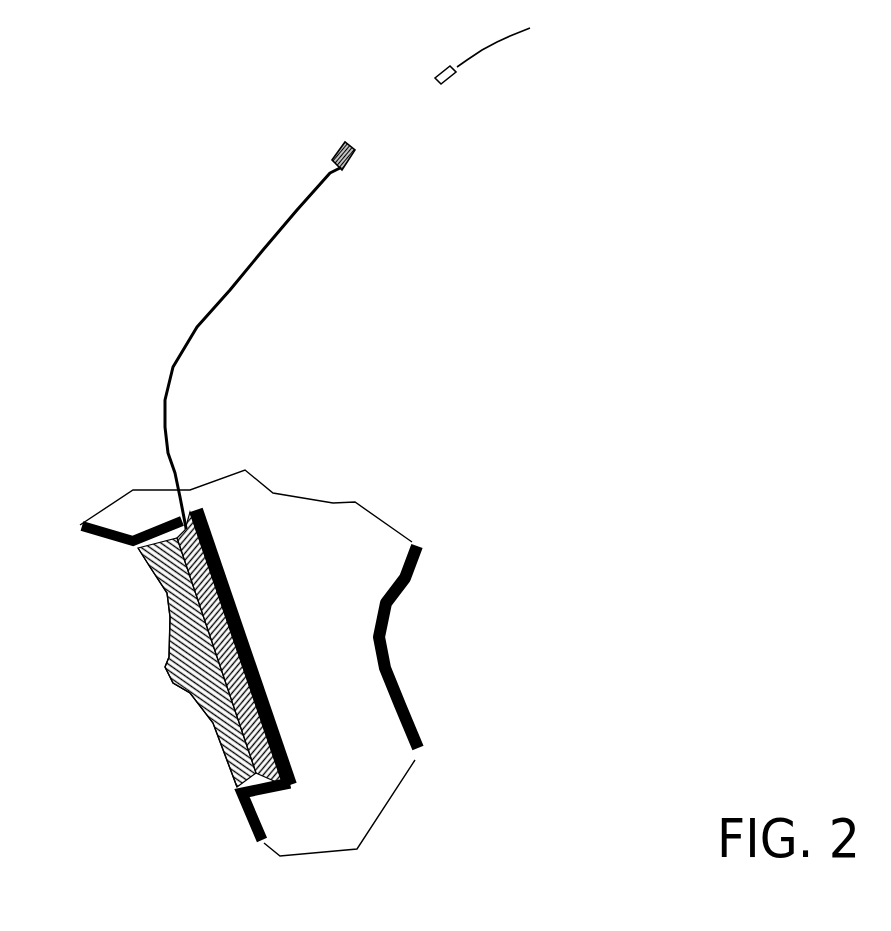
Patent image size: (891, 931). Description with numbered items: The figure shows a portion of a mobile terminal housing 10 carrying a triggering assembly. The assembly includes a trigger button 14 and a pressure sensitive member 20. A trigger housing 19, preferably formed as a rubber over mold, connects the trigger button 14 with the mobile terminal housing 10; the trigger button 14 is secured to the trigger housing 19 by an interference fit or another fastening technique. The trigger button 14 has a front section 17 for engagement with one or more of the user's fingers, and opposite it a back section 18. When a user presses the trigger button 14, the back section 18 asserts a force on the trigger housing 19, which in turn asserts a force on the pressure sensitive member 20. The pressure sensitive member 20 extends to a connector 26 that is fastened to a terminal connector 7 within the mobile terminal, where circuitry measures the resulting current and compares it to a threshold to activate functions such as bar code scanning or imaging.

The terminal connector 7 is at (482, 64).
The mobile terminal housing 10 is at (286, 663).
The trigger button 14 is at (178, 675).
The front section 17 is at (205, 648).
The back section 18 is at (197, 662).
The trigger housing 19 is at (132, 562).
The pressure sensitive member 20 is at (252, 348).
The connector 26 is at (385, 160).